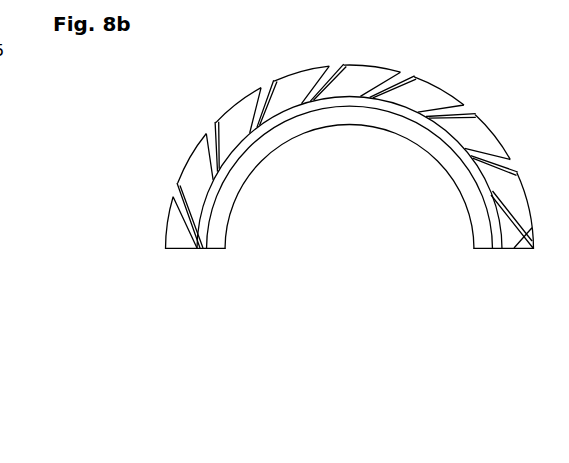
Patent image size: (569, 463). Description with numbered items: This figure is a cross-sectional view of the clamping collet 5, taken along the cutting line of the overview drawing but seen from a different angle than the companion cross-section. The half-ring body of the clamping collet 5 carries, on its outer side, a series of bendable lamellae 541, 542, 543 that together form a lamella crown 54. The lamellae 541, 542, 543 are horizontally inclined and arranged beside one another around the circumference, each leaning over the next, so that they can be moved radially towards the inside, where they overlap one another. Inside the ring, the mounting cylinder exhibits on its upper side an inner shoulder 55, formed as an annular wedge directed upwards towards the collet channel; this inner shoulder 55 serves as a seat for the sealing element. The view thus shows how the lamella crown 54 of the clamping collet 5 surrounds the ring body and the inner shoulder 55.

The clamping collet 5 is at (140, 114).
The lamella crown 54 is at (183, 162).
The lamella 541 is at (240, 113).
The lamella 542 is at (297, 81).
The lamella 543 is at (363, 72).
The inner shoulder 55 is at (411, 145).